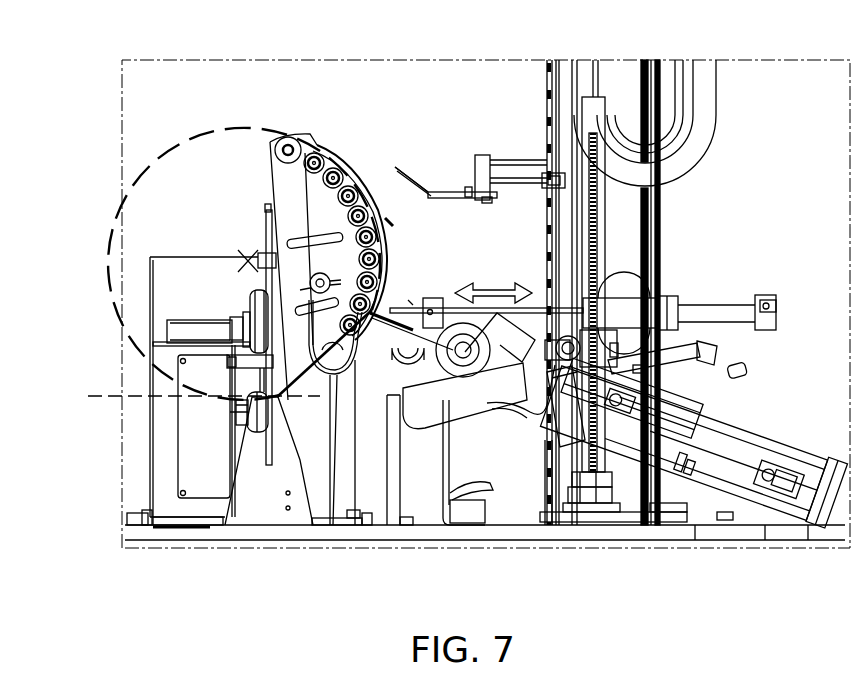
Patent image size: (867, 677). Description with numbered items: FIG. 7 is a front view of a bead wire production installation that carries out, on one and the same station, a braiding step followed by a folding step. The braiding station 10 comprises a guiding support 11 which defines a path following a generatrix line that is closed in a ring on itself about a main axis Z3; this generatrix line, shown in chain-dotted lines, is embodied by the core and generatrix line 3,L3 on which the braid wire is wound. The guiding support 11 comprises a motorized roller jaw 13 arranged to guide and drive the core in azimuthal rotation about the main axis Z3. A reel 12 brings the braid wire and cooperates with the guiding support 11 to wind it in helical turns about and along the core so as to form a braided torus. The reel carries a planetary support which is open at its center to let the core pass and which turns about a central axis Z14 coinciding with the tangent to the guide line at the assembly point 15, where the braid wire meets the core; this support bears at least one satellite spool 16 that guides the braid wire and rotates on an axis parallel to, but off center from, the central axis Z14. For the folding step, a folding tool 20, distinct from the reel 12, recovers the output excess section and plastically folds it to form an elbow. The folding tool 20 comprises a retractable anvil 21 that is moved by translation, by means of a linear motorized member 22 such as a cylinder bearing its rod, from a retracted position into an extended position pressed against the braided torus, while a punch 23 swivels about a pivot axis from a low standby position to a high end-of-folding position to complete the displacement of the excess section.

The braiding station 10 is at (172, 104).
The core and generatrix line 3,L3 is at (146, 176).
The central axis Z14 is at (100, 396).
The main axis Z3 is at (246, 258).
The guiding support 11 is at (285, 187).
The reel 12 is at (246, 443).
The motorized roller jaw 13 is at (365, 190).
The assembly point 15 is at (291, 470).
The satellite spool 16 is at (253, 312).
The folding tool 20 is at (417, 286).
The retractable anvil 21 is at (388, 292).
The linear motorized member 22 is at (645, 308).
The punch 23 is at (440, 360).